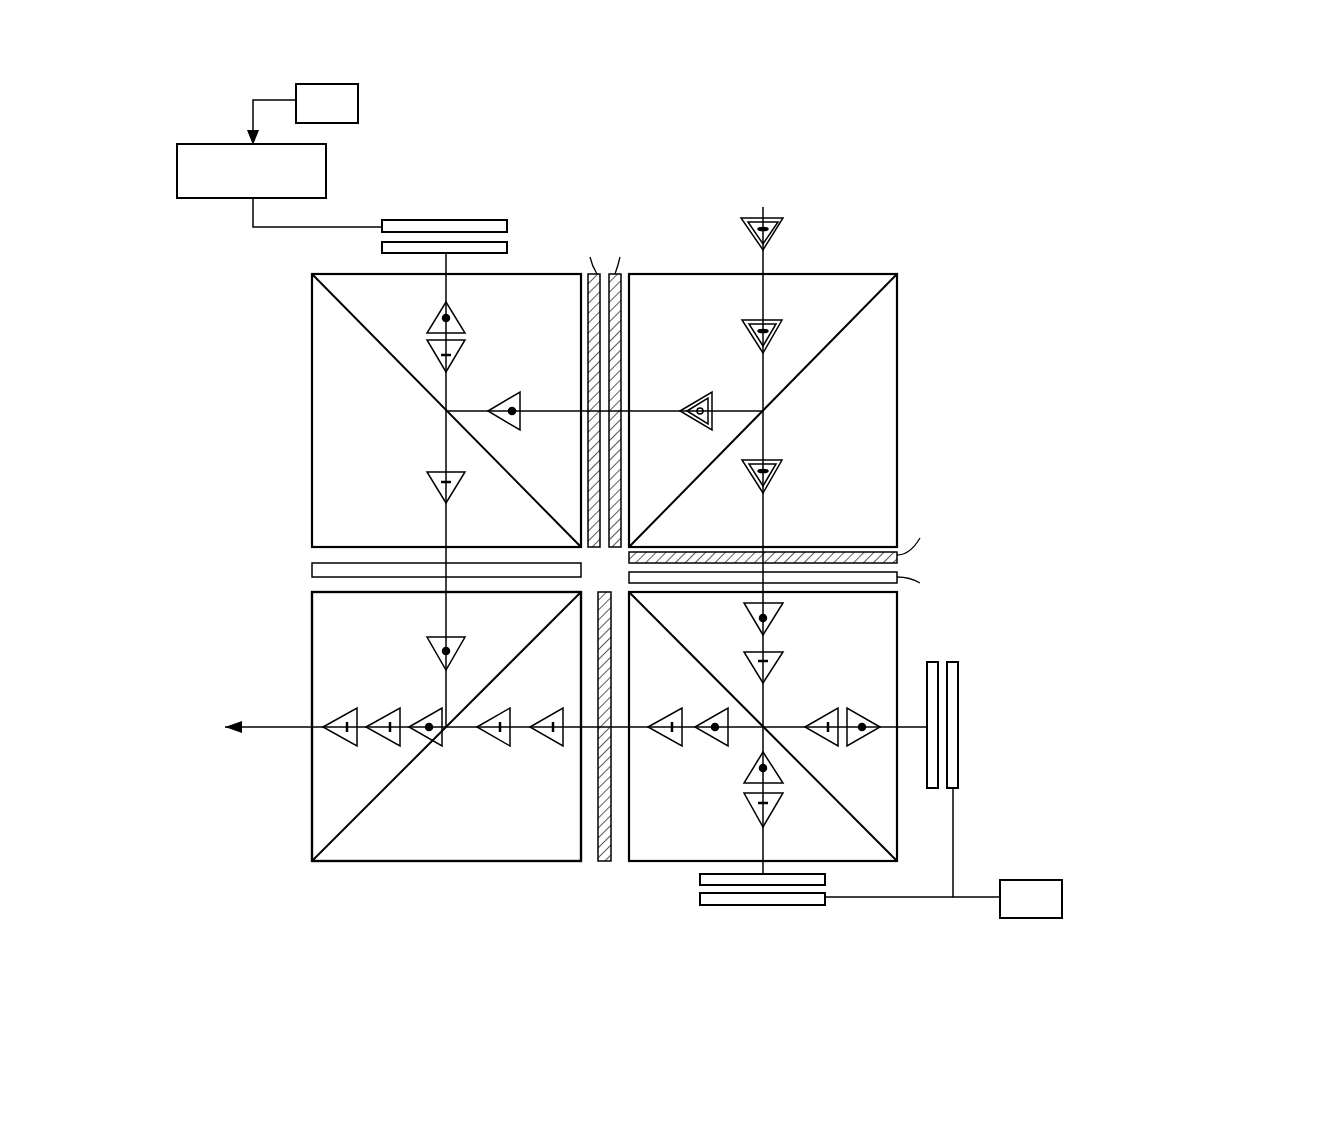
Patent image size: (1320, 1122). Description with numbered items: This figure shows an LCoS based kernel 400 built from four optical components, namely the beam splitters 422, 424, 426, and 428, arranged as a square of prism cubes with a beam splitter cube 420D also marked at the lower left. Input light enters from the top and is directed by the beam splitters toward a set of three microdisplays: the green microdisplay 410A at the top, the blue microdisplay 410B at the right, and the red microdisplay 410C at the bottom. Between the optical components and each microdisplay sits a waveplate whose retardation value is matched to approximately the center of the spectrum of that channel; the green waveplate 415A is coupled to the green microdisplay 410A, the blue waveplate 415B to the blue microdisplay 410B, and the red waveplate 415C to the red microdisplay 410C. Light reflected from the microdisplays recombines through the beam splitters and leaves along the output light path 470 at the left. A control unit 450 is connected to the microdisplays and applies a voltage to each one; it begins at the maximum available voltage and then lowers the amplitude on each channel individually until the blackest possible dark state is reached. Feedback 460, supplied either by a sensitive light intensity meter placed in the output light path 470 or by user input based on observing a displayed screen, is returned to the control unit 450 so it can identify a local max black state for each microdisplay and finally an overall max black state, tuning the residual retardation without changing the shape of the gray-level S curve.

The kernel 400 is at (893, 219).
The green microdisplay 410A is at (427, 220).
The blue microdisplay 410B is at (958, 758).
The red microdisplay 410C is at (798, 905).
The green waveplate 415A is at (382, 244).
The blue waveplate 415B is at (932, 662).
The red waveplate 415C is at (827, 882).
The polarizing beam splitter cube 420D is at (392, 862).
The beam splitter 422 is at (312, 394).
The beam splitter 424 is at (897, 337).
The beam splitter 426 is at (685, 862).
The beam splitter 428 is at (312, 643).
The control unit 450 is at (619, 531).
The feedback 460 is at (327, 103).
The output light path 470 is at (540, 770).